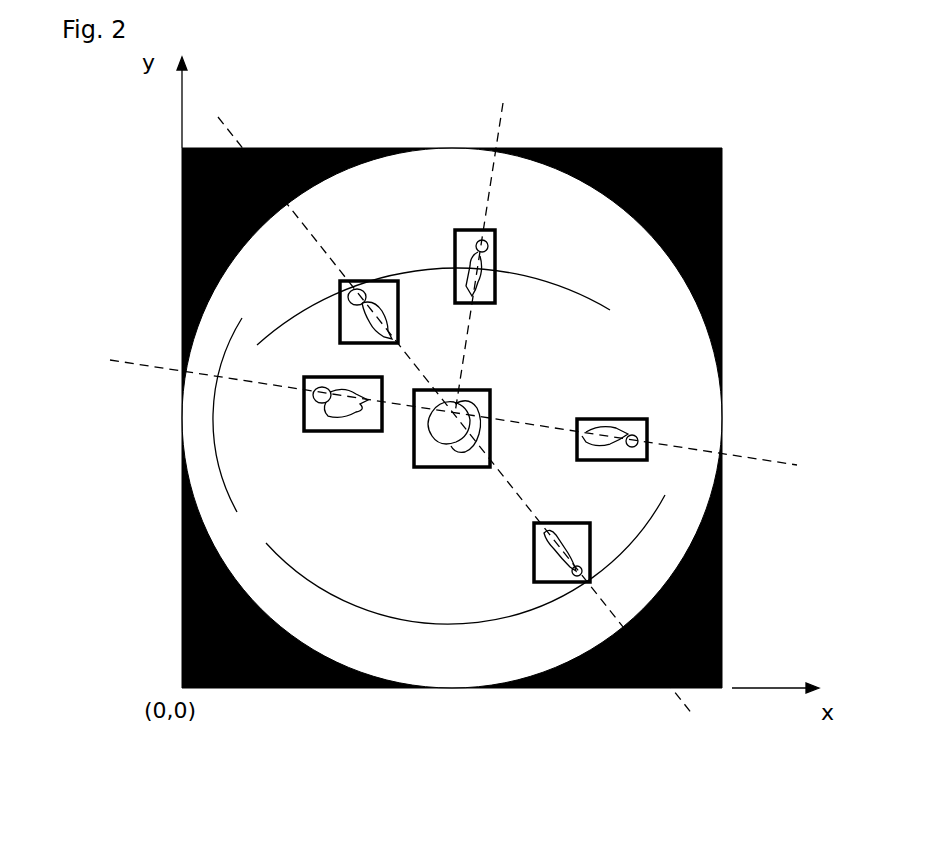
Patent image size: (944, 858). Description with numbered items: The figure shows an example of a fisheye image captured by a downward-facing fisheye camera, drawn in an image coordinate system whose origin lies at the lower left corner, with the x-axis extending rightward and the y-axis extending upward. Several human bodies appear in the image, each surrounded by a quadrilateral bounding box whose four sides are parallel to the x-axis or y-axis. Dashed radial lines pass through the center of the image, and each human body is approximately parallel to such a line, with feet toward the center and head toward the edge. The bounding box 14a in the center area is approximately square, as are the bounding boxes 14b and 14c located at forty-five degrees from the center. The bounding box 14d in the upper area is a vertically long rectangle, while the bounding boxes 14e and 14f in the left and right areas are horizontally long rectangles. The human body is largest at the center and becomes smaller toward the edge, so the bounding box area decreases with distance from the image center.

The bounding box 14a is at (440, 467).
The bounding box 14b is at (340, 315).
The bounding box 14c is at (534, 557).
The bounding box 14d is at (455, 250).
The bounding box 14e is at (322, 431).
The bounding box 14f is at (600, 419).